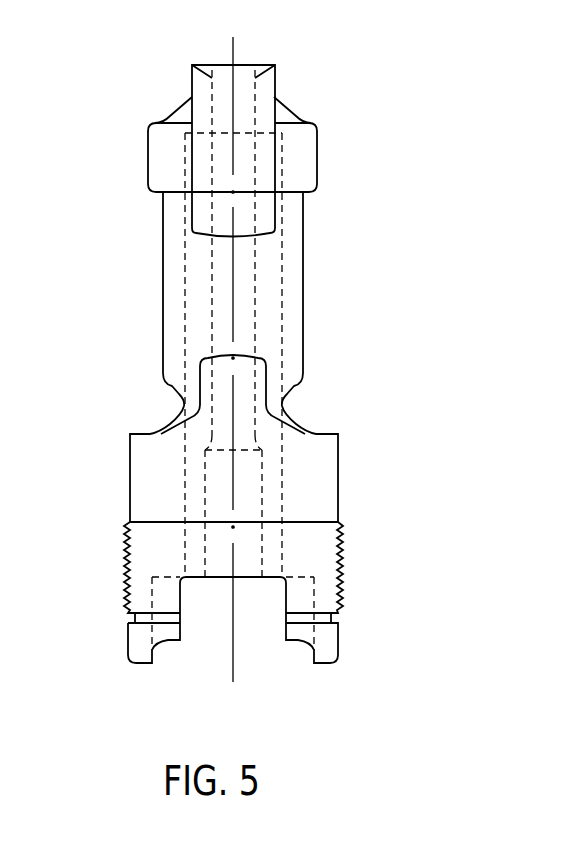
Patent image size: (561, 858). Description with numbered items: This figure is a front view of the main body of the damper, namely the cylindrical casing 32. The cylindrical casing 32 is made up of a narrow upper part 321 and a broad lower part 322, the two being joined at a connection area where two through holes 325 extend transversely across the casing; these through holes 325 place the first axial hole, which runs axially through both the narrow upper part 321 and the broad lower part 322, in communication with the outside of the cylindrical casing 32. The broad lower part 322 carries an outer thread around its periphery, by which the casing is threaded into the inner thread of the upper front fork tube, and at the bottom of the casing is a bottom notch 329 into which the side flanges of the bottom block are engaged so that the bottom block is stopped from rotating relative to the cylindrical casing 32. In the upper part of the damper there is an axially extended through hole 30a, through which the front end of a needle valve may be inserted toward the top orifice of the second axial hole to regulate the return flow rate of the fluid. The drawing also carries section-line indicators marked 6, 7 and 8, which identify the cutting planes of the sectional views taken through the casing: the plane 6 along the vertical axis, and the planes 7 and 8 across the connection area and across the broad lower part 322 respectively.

The axially extended through hole 30a is at (0, 775).
The cylindrical casing 32 is at (143, 233).
The narrow upper part 321 is at (303, 280).
The through holes 325 is at (168, 402).
The broad lower part 322 is at (338, 458).
The bottom notch 329 is at (205, 608).
The section line 6 is at (233, 702).
The section line 7 is at (375, 411).
The section line 8 is at (380, 496).